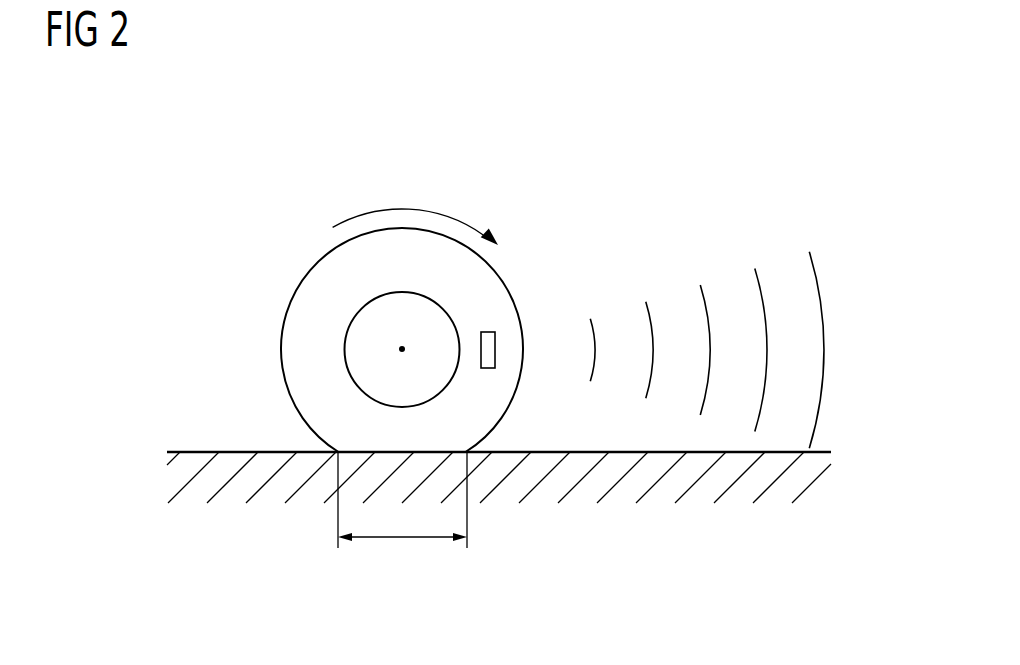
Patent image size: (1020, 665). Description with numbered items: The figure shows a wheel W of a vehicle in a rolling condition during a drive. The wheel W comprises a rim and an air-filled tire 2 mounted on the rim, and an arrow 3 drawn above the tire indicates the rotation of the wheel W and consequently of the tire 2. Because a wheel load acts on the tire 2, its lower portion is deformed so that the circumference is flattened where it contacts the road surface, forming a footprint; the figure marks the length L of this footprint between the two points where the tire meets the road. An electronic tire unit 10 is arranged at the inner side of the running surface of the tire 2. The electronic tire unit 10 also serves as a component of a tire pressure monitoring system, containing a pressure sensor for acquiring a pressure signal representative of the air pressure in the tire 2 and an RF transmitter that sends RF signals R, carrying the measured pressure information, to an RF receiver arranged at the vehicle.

The tire 2 is at (332, 264).
The arrow 3 is at (408, 208).
The electronic tire unit 10 is at (488, 331).
The wheel W is at (305, 203).
The RF signals R is at (708, 200).
The length of the footprint L is at (403, 540).